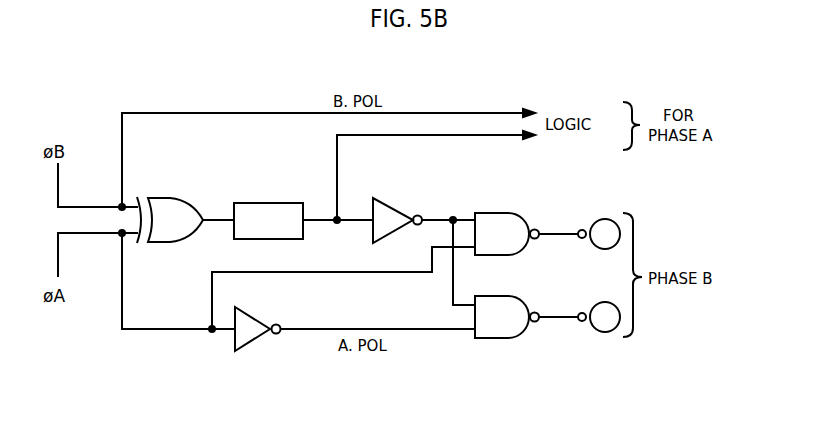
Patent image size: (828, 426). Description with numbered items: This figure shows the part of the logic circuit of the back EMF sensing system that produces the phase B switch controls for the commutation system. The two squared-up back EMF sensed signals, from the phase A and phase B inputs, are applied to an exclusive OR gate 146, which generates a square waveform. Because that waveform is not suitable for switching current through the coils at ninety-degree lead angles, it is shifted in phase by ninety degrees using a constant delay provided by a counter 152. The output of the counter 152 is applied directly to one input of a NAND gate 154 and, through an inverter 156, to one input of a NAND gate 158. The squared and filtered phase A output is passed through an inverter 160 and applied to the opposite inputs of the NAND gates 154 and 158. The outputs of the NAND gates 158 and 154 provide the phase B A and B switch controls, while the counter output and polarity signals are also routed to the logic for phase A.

The exclusive OR gate 146 is at (168, 196).
The counter 152 is at (253, 203).
The NAND gate 154 is at (503, 338).
The inverter 156 is at (393, 204).
The NAND gate 158 is at (498, 213).
The inverter 160 is at (247, 340).